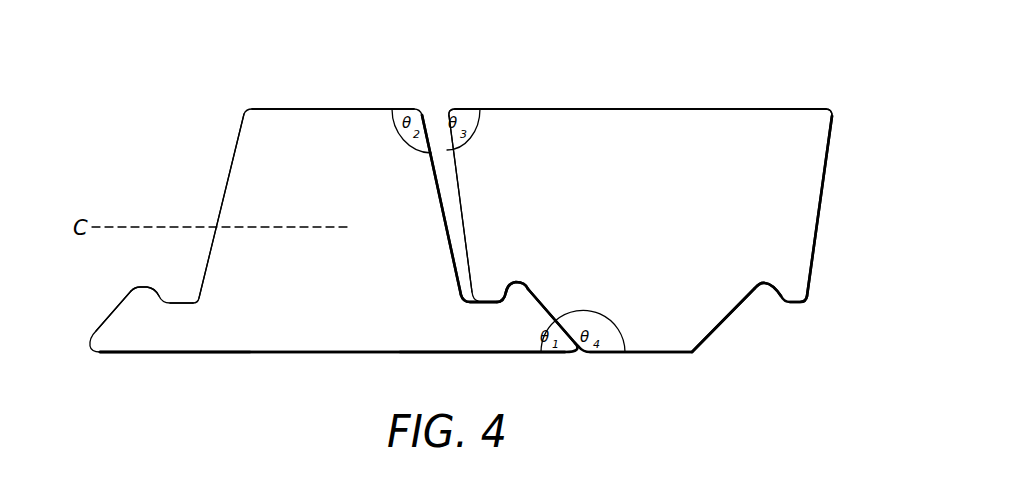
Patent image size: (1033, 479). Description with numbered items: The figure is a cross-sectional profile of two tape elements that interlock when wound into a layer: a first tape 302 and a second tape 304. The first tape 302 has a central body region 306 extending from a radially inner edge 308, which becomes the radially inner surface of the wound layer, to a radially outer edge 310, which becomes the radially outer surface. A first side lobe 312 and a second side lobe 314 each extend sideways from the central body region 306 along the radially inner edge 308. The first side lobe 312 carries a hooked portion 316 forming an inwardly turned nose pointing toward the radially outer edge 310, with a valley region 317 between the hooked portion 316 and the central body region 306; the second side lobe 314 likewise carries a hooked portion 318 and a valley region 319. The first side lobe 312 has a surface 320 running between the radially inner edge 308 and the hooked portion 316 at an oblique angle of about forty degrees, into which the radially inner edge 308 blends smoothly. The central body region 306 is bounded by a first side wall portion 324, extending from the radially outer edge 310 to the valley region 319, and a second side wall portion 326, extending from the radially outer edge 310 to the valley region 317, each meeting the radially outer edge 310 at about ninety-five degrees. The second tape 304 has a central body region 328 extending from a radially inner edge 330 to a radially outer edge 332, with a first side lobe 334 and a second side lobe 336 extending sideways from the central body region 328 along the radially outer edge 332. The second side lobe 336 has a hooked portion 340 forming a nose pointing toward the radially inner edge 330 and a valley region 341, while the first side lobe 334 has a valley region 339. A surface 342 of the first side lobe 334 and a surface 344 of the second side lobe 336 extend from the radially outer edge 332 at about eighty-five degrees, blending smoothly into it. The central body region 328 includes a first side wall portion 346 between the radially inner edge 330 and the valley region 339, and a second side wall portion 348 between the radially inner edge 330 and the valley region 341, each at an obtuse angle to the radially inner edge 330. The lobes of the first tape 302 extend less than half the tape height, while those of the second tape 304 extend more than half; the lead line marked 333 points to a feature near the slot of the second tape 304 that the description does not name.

The first tape 302 is at (178, 138).
The second tape 304 is at (731, 55).
The central body region 306 is at (350, 213).
The radially inner edge 308 is at (333, 353).
The radially outer edge 310 is at (328, 108).
The first side lobe 312 is at (172, 335).
The second side lobe 314 is at (470, 333).
The hooked portion 316 is at (140, 285).
The valley region 317 is at (180, 302).
The hooked portion 318 is at (514, 291).
The valley region 319 is at (470, 303).
The surface 320 is at (112, 312).
The first side wall portion 324 is at (442, 205).
The second side wall portion 326 is at (233, 162).
The central body region 328 is at (657, 213).
The radially inner edge 330 is at (645, 353).
The radially outer edge 332 is at (637, 108).
The slot sidewall 333 is at (483, 298).
The first side lobe 334 is at (495, 158).
The second side lobe 336 is at (800, 158).
The valley region 339 is at (517, 277).
The hooked portion 340 is at (793, 303).
The valley region 341 is at (763, 284).
The surface 342 is at (458, 195).
The surface 344 is at (820, 205).
The first side wall portion 346 is at (551, 303).
The second side wall portion 348 is at (723, 317).